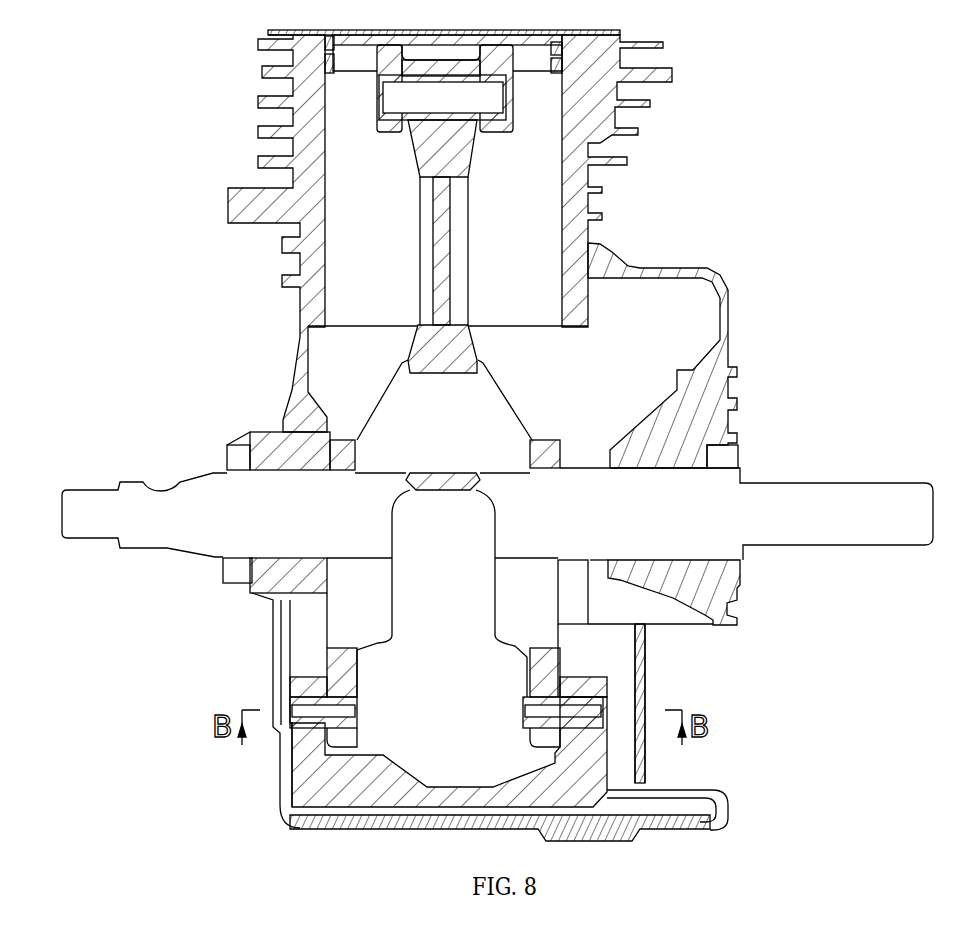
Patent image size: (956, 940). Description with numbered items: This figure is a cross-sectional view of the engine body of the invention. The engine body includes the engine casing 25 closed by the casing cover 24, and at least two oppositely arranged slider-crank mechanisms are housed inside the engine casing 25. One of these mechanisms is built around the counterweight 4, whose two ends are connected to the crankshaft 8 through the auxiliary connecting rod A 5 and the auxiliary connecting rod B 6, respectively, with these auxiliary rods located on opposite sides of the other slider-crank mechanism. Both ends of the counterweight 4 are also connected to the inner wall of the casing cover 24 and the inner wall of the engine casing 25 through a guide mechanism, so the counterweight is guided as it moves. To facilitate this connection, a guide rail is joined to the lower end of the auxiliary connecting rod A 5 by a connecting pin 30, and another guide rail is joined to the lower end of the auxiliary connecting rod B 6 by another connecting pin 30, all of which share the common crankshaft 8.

The crankshaft 8 is at (497, 538).
The auxiliary connecting rod A 5 is at (195, 710).
The connecting pin 30 is at (223, 687).
The counterweight 4 is at (367, 715).
The engine casing 25 is at (400, 793).
The auxiliary connecting rod B 6 is at (668, 650).
The casing cover 24 is at (707, 791).